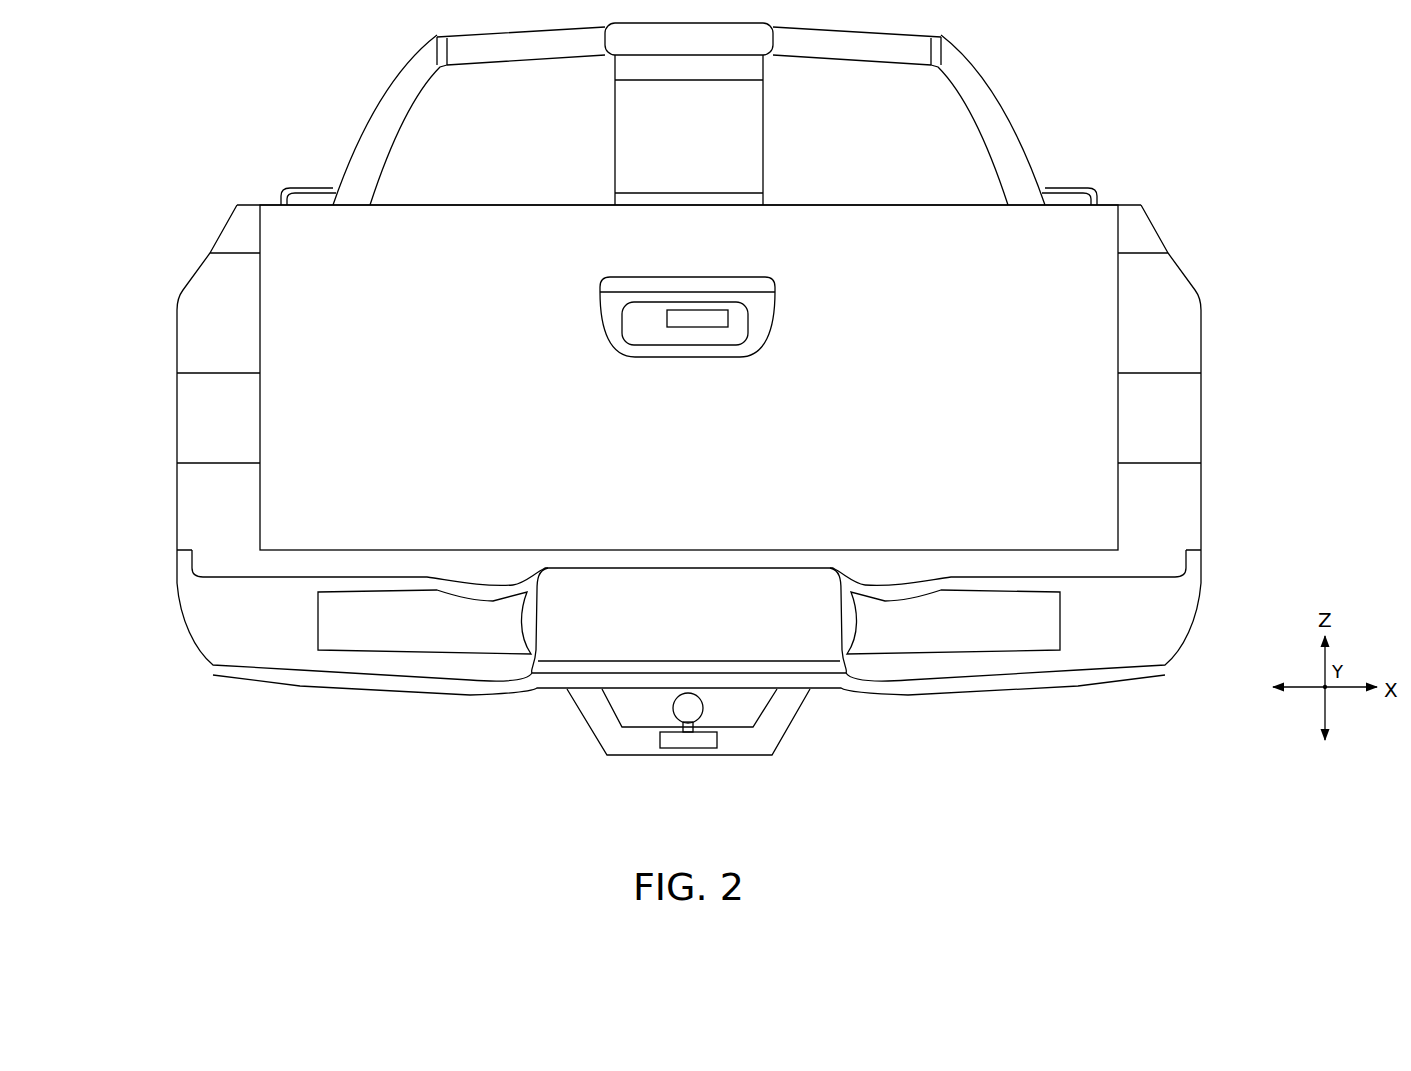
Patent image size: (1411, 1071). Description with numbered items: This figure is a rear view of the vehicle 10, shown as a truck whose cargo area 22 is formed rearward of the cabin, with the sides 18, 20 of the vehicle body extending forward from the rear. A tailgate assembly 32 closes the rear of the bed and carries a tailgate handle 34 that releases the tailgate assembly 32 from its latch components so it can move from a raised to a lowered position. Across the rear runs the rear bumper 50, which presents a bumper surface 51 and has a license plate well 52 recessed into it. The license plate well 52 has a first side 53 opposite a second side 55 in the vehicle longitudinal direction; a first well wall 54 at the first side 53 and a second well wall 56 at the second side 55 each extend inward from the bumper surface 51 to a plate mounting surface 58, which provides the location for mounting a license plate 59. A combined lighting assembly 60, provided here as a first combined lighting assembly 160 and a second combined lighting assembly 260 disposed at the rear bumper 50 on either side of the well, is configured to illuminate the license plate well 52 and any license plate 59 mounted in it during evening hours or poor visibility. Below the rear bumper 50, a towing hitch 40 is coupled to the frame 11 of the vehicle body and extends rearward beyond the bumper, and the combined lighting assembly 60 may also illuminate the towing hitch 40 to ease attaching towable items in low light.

The vehicle 10 is at (688, 413).
The frame 11 is at (597, 722).
The side 18 is at (158, 404).
The side 20 is at (1219, 402).
The cargo area 22 is at (942, 106).
The tailgate assembly 32 is at (688, 354).
The tailgate handle 34 is at (786, 310).
The towing hitch 40 is at (688, 745).
The rear bumper 50 is at (685, 620).
The bumper surface 51 is at (257, 675).
The license plate well 52 is at (689, 573).
The first side 53 is at (835, 569).
The first well wall 54 is at (867, 585).
The second side 55 is at (544, 569).
The second well wall 56 is at (512, 585).
The plate mounting surface 58 is at (657, 577).
The license plate 59 is at (608, 585).
The combined lighting assembly 60 is at (689, 622).
The first combined lighting assembly 160 is at (1043, 623).
The second combined lighting assembly 260 is at (337, 623).